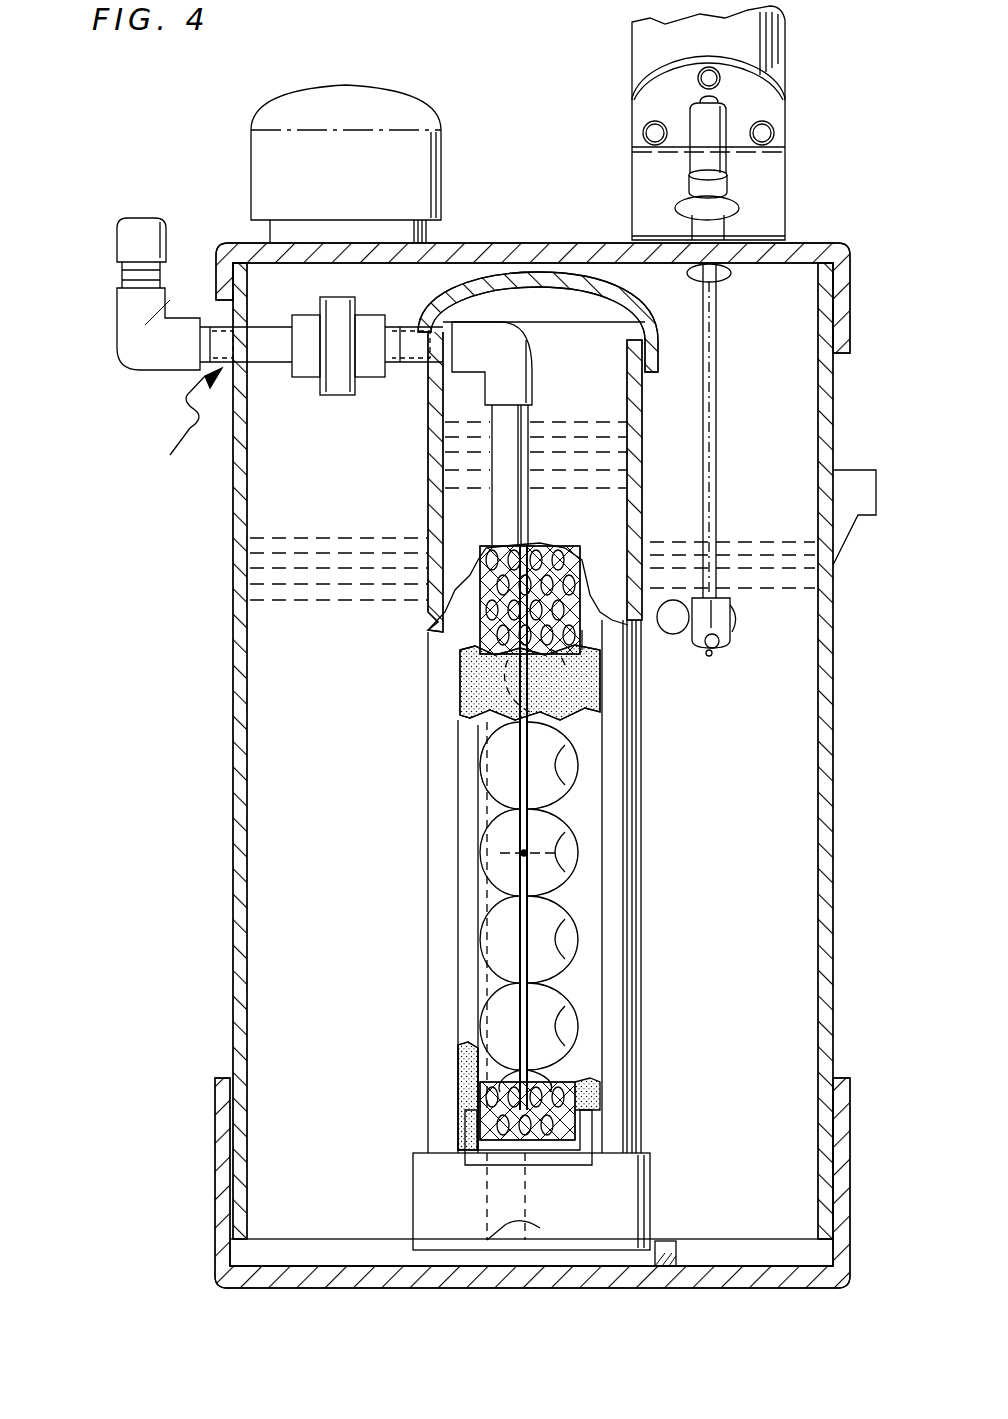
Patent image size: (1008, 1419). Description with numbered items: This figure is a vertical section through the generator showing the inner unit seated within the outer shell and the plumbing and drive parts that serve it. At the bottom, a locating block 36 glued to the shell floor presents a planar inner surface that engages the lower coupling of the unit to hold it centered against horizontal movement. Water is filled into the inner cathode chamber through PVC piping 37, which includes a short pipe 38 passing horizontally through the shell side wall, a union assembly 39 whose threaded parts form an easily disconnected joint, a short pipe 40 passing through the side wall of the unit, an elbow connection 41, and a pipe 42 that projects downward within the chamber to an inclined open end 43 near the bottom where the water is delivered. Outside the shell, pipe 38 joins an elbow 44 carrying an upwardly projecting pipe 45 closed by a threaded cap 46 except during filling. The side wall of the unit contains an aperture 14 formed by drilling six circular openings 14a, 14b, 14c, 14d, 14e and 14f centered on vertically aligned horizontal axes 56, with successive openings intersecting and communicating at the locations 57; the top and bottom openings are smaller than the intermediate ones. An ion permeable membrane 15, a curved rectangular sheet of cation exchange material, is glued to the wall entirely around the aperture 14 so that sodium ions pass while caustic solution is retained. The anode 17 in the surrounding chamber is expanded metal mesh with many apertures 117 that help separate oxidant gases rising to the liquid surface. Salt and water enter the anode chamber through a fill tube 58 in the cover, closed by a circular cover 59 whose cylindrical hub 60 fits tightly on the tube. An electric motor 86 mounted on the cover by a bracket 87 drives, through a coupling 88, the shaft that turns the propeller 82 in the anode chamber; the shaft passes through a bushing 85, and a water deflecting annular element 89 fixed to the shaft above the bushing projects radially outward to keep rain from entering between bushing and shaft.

The aperture 14 is at (560, 778).
The circular opening 14a is at (555, 693).
The circular opening 14b is at (560, 762).
The circular opening 14c is at (600, 855).
The circular opening 14d is at (585, 935).
The circular opening 14e is at (578, 1002).
The circular opening 14f is at (570, 1092).
The ion permeable membrane 15 is at (465, 680).
The anode 17 is at (583, 575).
The apertures 117 is at (576, 624).
The locating block 36 is at (670, 1243).
The PVC piping 37 is at (181, 411).
The pipe 38 is at (268, 360).
The union assembly 39 is at (320, 302).
The pipe 40 is at (408, 332).
The elbow connection 41 is at (520, 372).
The pipe 42 is at (520, 522).
The inclined open end 43 is at (528, 1196).
The elbow 44 is at (135, 338).
The pipe 45 is at (128, 280).
The threaded cap 46 is at (160, 228).
The horizontal axes 56 is at (520, 853).
The locations 57 is at (505, 790).
The fill tube 58 is at (432, 228).
The circular cover 59 is at (425, 110).
The cylindrical hub 60 is at (443, 178).
The propeller 82 is at (735, 622).
The bushing 85 is at (720, 222).
The electric motor 86 is at (768, 50).
The bracket 87 is at (780, 165).
The coupling 88 is at (712, 125).
The water deflecting annular element 89 is at (715, 190).